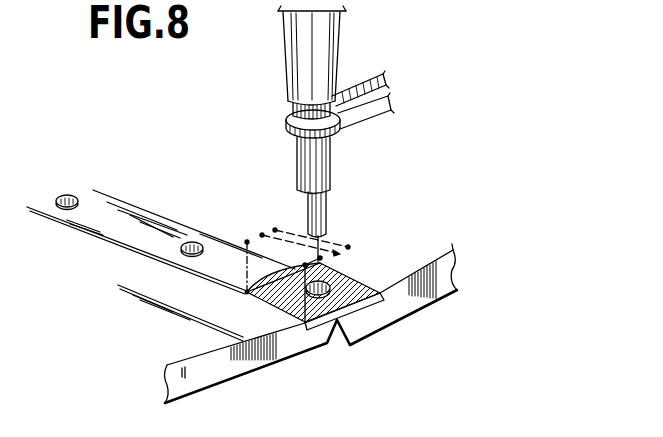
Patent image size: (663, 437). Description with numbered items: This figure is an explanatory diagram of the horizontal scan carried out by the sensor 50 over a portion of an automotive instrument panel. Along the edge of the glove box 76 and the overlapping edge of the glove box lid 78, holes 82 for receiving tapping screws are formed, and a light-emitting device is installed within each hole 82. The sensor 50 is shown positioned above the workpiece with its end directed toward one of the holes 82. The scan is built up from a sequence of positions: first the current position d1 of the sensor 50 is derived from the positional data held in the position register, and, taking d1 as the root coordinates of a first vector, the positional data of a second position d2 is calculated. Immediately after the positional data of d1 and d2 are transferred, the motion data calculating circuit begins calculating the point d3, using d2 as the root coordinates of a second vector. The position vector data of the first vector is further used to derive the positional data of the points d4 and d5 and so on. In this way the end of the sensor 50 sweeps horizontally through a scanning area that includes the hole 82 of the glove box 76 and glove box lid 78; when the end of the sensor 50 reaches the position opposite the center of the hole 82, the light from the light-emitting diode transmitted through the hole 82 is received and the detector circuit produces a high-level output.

The sensor 50 is at (333, 48).
The glove box 76 is at (445, 278).
The glove box lid 78 is at (278, 362).
The holes 82 is at (70, 195).
The current position of the sensor d1 is at (246, 241).
The position d2 is at (246, 294).
The point d3 is at (325, 258).
The point d4 is at (262, 234).
The point d5 is at (275, 229).